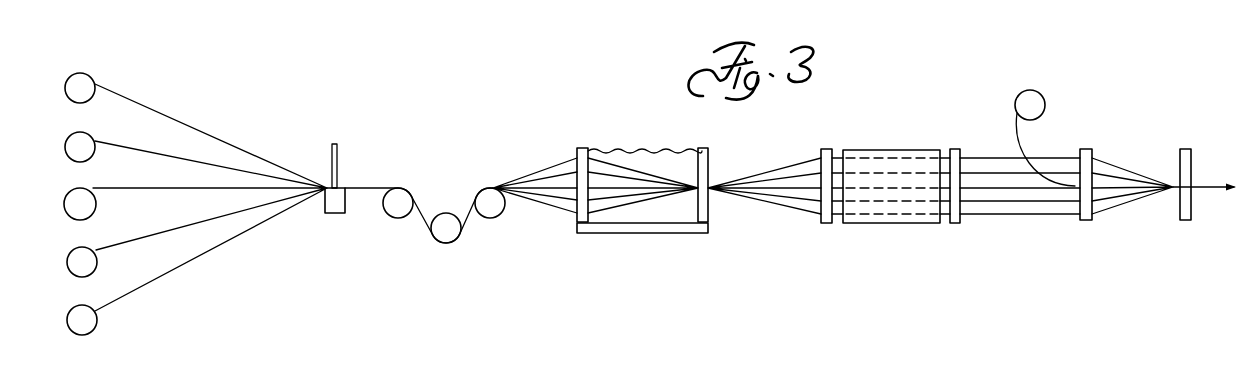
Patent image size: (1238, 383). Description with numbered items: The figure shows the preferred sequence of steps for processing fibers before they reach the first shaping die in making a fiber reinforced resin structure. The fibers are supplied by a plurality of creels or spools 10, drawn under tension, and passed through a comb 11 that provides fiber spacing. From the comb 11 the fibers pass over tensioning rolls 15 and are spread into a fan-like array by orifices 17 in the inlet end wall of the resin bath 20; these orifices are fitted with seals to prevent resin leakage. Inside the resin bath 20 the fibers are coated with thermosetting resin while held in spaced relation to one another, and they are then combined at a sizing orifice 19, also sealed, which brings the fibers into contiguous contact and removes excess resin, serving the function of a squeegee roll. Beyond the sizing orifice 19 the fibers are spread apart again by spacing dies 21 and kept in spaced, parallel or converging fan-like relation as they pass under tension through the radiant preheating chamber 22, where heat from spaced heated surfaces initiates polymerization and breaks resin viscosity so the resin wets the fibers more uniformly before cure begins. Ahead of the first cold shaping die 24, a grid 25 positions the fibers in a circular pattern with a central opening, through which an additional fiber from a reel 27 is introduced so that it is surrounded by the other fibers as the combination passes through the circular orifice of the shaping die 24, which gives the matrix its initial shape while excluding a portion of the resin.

The creels or spools 10 is at (96, 314).
The comb 11 is at (337, 160).
The tensioning rolls 15 is at (492, 218).
The orifices 17 is at (564, 210).
The sizing orifice 19 is at (716, 184).
The resin bath 20 is at (648, 226).
The spacing dies 21 is at (825, 223).
The preheating chamber 22 is at (883, 231).
The first cold shaping die 24 is at (1186, 222).
The grid 25 is at (1087, 222).
The reel 27 is at (1045, 104).